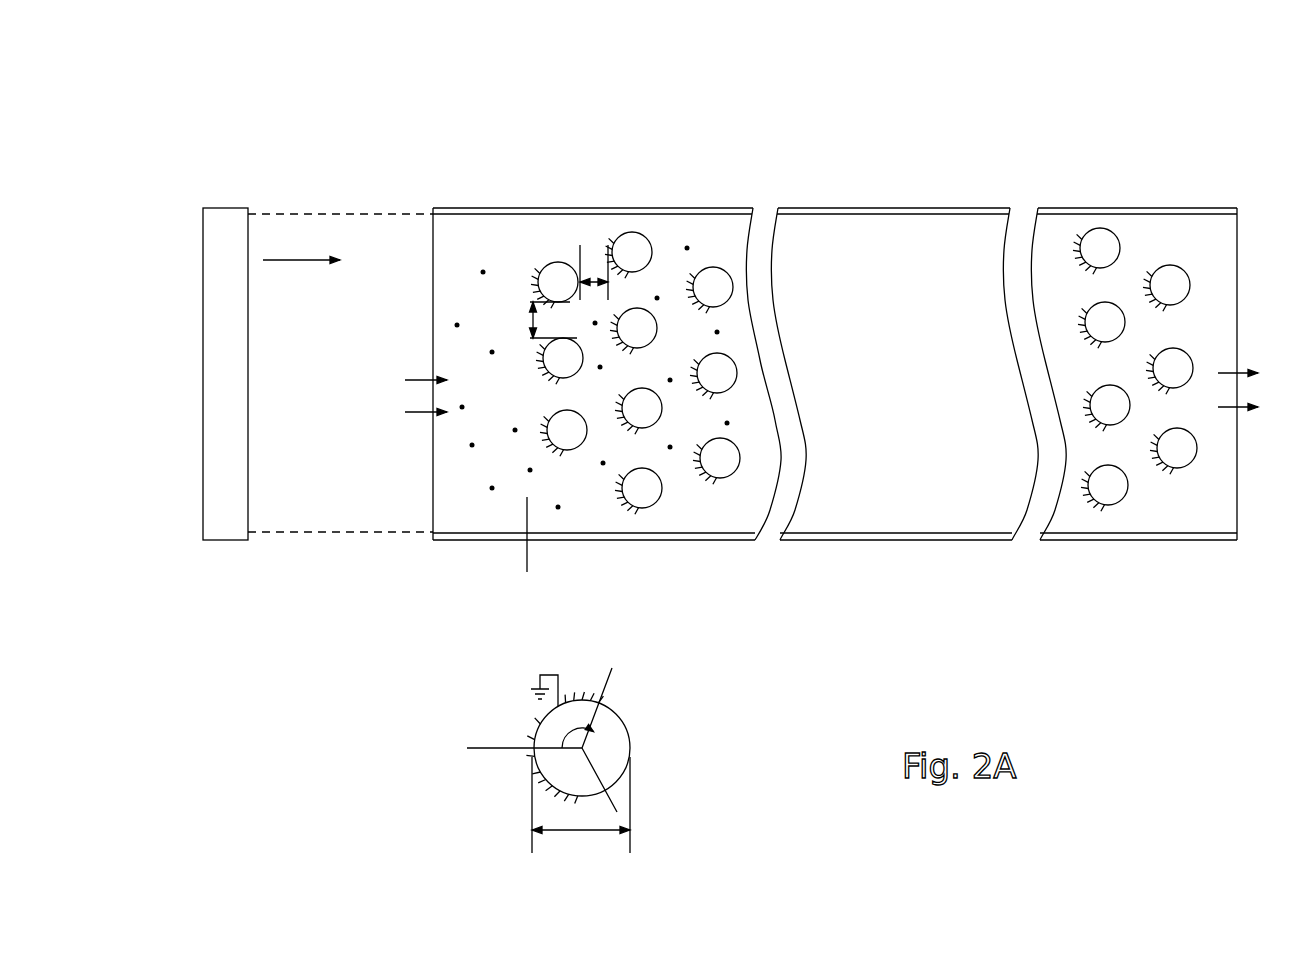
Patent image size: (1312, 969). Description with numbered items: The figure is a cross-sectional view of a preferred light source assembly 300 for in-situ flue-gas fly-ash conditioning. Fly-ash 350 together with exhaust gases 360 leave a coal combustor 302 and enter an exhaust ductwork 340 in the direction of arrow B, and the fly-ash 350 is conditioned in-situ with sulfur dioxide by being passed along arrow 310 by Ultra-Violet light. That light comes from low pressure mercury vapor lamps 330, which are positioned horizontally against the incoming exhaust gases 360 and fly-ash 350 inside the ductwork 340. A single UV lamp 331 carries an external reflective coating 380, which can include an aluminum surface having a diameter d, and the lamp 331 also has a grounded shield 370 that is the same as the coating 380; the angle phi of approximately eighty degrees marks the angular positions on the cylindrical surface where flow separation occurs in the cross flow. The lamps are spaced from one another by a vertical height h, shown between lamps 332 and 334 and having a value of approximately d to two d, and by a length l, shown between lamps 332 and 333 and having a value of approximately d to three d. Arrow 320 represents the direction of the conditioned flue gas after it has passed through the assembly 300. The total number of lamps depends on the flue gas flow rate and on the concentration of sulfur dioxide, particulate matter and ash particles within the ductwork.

The light source assembly embodiment 300 is at (478, 125).
The coal combustor 302 is at (227, 220).
The flow arrow 310 is at (415, 410).
The conditioned flue gas direction arrow 320 is at (1256, 373).
The low pressure mercury vapor lamps 330 is at (832, 419).
The UV lamp 331 is at (678, 498).
The lamp 332 is at (543, 265).
The lamp 333 is at (637, 238).
The lamp 334 is at (563, 357).
The exhaust ductwork 340 is at (832, 537).
The fly-ash 350 is at (483, 272).
The exhaust gases 360 is at (528, 551).
The grounded shield 370 is at (522, 683).
The external reflective coating 380 is at (540, 793).